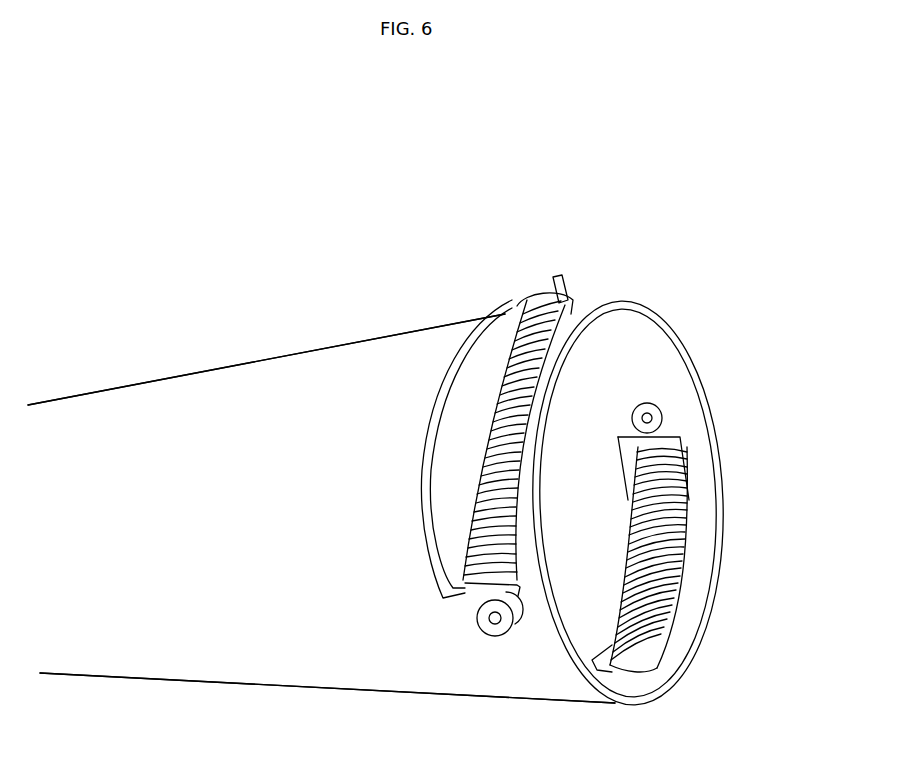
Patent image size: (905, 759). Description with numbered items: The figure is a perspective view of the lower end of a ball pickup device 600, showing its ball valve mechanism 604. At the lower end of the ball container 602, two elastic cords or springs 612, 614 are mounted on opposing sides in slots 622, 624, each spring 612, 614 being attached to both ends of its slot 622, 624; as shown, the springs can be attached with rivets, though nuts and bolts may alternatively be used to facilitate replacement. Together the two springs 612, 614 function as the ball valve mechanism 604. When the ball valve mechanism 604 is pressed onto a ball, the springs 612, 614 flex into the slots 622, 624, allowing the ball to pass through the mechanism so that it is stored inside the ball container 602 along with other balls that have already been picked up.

The assembly 600 is at (165, 250).
The ball container 602 is at (272, 352).
The ball valve mechanism 604 is at (680, 308).
The spring 612 is at (500, 372).
The spring 614 is at (683, 467).
The slot 622 is at (447, 443).
The slot 624 is at (627, 443).